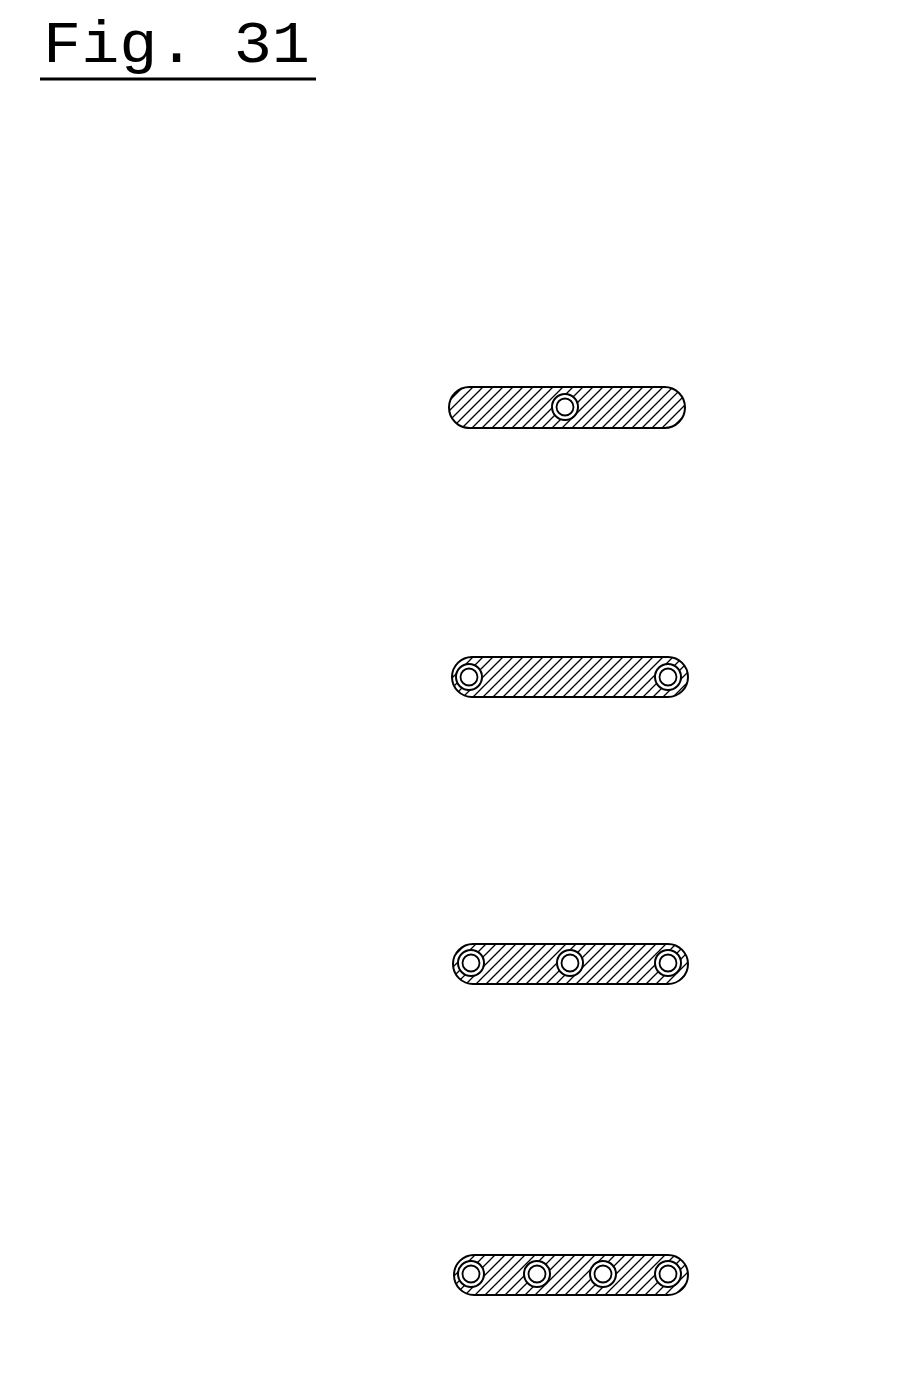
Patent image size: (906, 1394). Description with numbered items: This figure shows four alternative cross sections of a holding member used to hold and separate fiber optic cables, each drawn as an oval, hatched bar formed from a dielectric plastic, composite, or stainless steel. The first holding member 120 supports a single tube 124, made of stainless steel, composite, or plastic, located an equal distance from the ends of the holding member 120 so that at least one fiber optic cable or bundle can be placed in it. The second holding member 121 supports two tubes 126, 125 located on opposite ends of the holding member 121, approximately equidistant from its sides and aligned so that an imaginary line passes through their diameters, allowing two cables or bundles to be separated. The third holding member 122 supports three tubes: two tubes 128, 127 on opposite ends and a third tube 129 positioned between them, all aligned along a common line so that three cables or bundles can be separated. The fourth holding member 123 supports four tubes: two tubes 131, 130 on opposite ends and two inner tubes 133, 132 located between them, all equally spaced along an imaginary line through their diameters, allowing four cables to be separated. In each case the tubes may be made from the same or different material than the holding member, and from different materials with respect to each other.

The holding member 120 is at (509, 369).
The tube 124 is at (506, 340).
The holding member 121 is at (570, 640).
The tube 126 is at (410, 611).
The tube 125 is at (725, 609).
The holding member 122 is at (600, 885).
The tube 128 is at (412, 897).
The third tube 129 is at (506, 880).
The tube 127 is at (726, 895).
The holding member 123 is at (571, 1313).
The tube 131 is at (413, 1209).
The inner tube 133 is at (474, 1191).
The inner tube 132 is at (668, 1189).
The tube 130 is at (726, 1206).